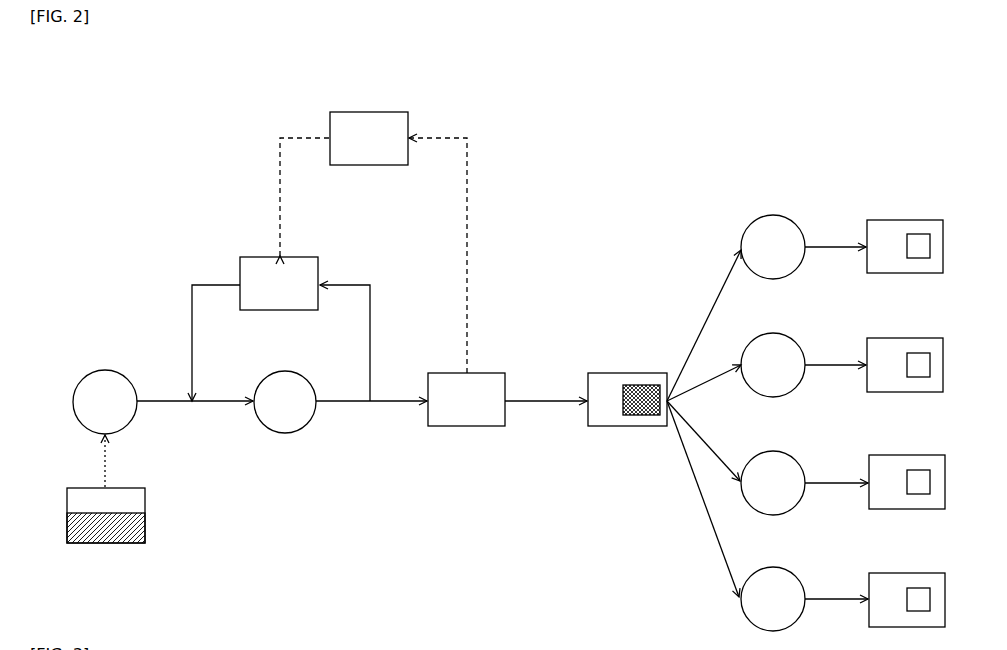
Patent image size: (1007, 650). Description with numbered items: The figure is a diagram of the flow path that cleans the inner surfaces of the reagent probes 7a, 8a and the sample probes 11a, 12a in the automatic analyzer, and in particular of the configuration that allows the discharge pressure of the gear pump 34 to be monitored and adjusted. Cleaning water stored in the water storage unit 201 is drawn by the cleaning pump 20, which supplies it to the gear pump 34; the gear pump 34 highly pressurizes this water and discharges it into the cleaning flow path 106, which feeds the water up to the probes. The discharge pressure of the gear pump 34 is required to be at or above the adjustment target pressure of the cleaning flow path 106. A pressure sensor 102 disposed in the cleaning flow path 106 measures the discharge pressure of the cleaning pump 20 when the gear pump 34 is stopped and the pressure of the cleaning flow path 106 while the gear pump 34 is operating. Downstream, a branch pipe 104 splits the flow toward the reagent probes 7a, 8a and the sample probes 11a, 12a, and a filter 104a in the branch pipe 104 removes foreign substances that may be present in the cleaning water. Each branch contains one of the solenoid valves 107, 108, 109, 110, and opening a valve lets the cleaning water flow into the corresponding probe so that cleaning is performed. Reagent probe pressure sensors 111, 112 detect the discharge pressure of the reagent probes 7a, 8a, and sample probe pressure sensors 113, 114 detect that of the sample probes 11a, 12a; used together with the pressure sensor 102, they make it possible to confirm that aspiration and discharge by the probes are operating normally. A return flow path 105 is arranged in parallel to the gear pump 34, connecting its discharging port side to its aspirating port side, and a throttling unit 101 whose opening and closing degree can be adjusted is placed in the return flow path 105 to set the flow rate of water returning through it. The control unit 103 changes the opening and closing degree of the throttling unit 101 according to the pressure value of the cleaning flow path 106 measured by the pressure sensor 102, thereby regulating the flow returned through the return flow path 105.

The cleaning pump 20 is at (82, 372).
The gear pump 34 is at (277, 433).
The throttling unit 101 is at (257, 257).
The pressure sensor 102 is at (460, 426).
The control unit 103 is at (370, 112).
The branch pipe 104 is at (624, 426).
The filter 104a is at (637, 385).
The return flow path 105 is at (192, 316).
The cleaning flow path 106 is at (337, 402).
The solenoid valve 107 is at (758, 215).
The solenoid valve 108 is at (754, 340).
The solenoid valve 109 is at (758, 451).
The solenoid valve 110 is at (758, 568).
The reagent probe 7a is at (878, 220).
The reagent probe 8a is at (878, 338).
The sample probe 11a is at (878, 455).
The sample probe 12a is at (878, 573).
The reagent probe pressure sensor 111 is at (920, 234).
The reagent probe pressure sensor 112 is at (920, 353).
The sample probe pressure sensor 113 is at (920, 470).
The sample probe pressure sensor 114 is at (920, 588).
The water storage unit 201 is at (97, 543).